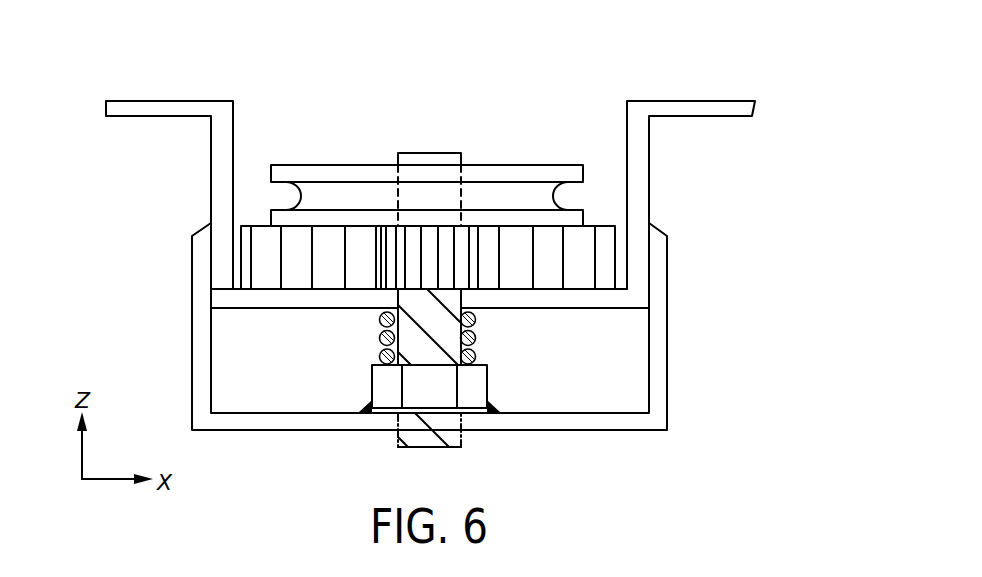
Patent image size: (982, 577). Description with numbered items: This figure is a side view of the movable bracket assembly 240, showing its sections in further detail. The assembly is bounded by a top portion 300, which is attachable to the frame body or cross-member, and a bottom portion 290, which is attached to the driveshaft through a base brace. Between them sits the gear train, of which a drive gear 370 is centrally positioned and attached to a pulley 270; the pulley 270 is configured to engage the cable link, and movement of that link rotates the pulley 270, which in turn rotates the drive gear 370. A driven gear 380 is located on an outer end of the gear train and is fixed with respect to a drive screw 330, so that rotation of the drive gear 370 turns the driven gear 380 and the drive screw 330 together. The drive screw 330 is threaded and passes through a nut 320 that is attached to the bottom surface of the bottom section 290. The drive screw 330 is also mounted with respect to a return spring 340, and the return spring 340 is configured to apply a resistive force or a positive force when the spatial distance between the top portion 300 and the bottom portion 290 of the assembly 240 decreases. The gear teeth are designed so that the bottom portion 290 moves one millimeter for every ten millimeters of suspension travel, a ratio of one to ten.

The movable bracket assembly 240 is at (787, 88).
The pulley 270 is at (297, 168).
The bottom portion 290 is at (657, 366).
The top portion 300 is at (687, 110).
The nut 320 is at (480, 383).
The drive screw 330 is at (415, 326).
The return spring 340 is at (476, 338).
The drive gear 370 is at (260, 237).
The driven gear 380 is at (395, 251).